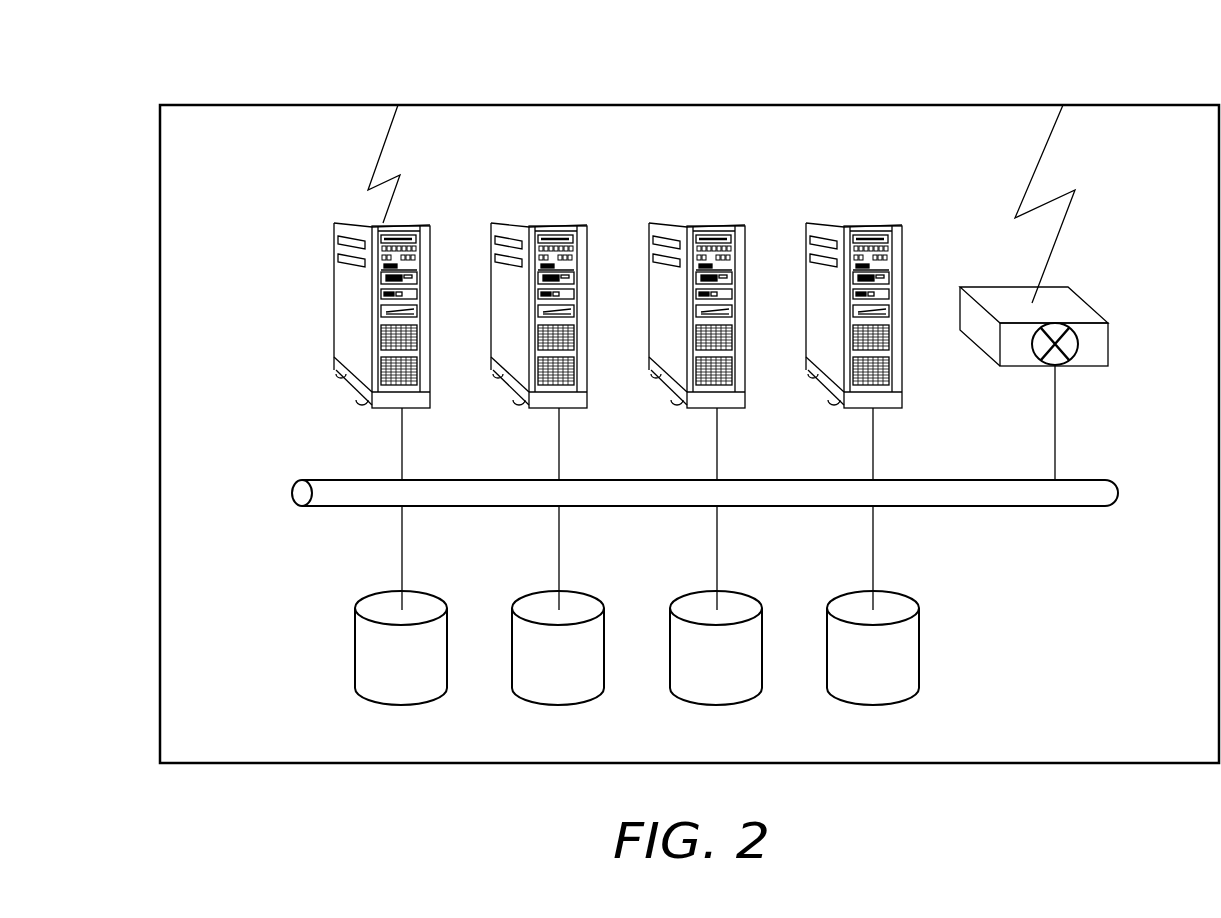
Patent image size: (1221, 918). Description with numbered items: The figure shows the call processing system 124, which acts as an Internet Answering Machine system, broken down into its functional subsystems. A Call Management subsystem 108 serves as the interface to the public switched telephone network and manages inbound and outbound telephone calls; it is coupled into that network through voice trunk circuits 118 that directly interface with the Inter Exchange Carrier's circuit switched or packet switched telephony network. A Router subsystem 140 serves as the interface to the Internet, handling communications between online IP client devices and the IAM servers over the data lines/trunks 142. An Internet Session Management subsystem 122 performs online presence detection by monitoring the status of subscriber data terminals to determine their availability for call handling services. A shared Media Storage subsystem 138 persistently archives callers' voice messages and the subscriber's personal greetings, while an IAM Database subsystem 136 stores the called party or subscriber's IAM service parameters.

The call processing system 124 is at (615, 105).
The voice trunk circuits 118 is at (383, 147).
The data lines/trunks 142 is at (1043, 153).
The Call Management (CM) subsystem 108 is at (353, 300).
The Internet Session Management (SM) subsystem 122 is at (902, 353).
The Router subsystem 140 is at (1108, 342).
The Media Storage (MS) subsystem 138 is at (368, 642).
The IAM Database (DB) subsystem 136 is at (905, 655).